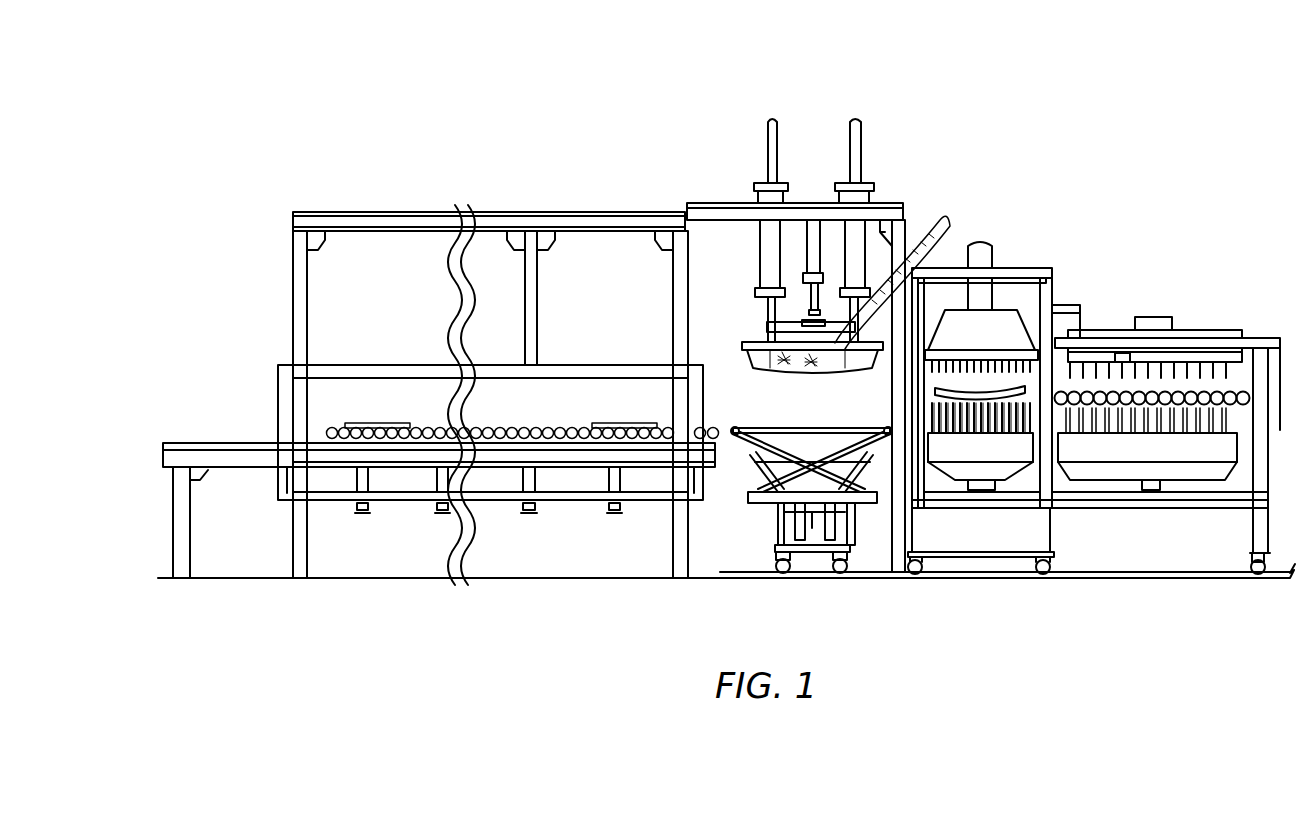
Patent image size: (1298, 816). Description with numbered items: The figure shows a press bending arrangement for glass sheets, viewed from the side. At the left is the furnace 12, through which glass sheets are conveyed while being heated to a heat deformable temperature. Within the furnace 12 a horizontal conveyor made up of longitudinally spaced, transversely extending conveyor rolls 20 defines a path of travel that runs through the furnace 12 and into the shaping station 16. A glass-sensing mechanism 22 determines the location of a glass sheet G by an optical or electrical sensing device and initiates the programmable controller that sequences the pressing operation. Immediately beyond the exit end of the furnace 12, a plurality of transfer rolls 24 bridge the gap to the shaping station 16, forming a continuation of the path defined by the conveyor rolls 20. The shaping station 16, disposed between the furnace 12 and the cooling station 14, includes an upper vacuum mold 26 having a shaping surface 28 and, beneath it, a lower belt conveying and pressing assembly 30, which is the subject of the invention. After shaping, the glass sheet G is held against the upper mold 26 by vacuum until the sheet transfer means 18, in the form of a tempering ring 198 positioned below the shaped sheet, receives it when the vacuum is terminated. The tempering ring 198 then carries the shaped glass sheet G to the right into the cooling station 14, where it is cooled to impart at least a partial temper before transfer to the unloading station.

The furnace 12 is at (438, 175).
The cooling station 14 is at (1147, 251).
The shaping station 16 is at (814, 93).
The sheet transfer means 18 is at (945, 388).
The tempering ring 198 is at (960, 398).
The conveyor rolls 20 is at (508, 428).
The glass-sensing mechanism 22 is at (560, 428).
The transfer rolls 24 is at (710, 424).
The upper vacuum mold 26 is at (757, 341).
The shaping surface 28 is at (851, 369).
The lower belt conveying and pressing assembly 30 is at (757, 515).
The glass sheet G is at (390, 422).